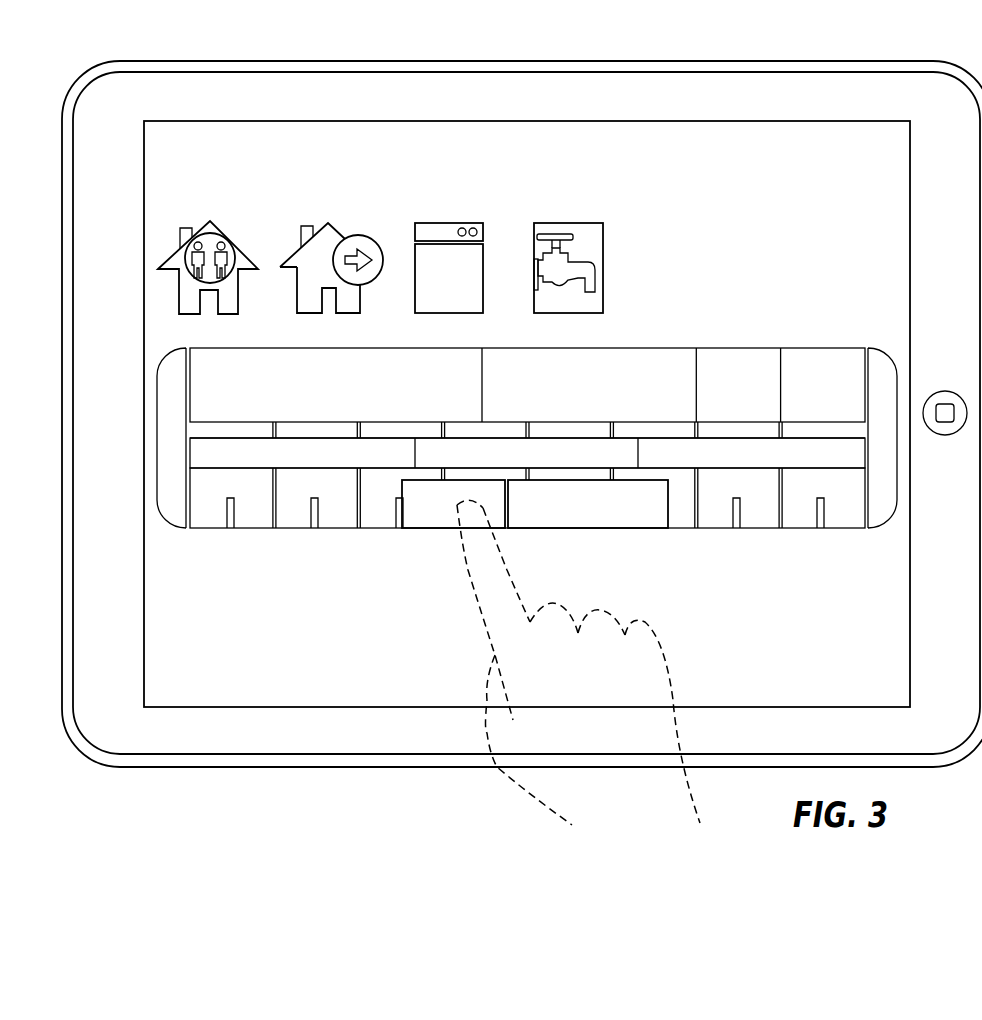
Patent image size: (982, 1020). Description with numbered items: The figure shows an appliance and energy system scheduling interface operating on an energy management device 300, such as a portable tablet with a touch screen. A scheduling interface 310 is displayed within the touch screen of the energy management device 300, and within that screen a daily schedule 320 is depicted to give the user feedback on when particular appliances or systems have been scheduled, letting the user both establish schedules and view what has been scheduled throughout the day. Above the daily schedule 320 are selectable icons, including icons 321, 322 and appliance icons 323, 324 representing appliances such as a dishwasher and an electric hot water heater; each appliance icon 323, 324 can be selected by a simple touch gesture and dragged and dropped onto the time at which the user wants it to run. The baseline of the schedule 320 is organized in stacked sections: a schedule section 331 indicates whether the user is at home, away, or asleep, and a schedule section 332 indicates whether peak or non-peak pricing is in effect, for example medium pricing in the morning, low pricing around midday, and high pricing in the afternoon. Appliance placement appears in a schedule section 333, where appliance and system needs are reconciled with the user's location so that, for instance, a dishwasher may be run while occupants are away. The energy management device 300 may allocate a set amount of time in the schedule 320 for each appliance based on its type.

The energy management device 300 is at (528, 61).
The scheduling interface 310 is at (884, 210).
The daily schedule 320 is at (497, 426).
The home icon 321 is at (234, 244).
The away icon 322 is at (341, 233).
The appliance icon 323 is at (449, 222).
The appliance icon 324 is at (569, 222).
The schedule section 331 is at (180, 348).
The schedule section 332 is at (180, 438).
The schedule section 333 is at (180, 471).